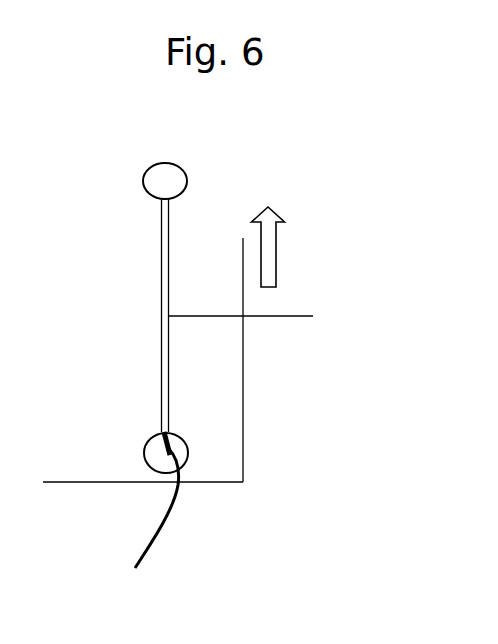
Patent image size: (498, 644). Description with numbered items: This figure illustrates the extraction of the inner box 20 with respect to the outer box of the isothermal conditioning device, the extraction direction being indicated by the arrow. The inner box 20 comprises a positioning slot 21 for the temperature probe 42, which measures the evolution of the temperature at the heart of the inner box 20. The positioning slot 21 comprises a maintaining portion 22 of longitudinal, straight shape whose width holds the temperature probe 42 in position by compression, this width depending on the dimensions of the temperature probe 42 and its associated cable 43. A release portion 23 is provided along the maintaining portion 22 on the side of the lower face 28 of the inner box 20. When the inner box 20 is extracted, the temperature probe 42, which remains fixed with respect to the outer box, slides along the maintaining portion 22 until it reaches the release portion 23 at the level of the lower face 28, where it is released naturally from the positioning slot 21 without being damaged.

The inner box 20 is at (243, 357).
The positioning slot 21 is at (135, 338).
The maintaining portion 22 is at (259, 316).
The release portion 23 is at (188, 180).
The lower face 28 is at (100, 482).
The temperature probe 42 is at (175, 438).
The cable 43 is at (178, 492).